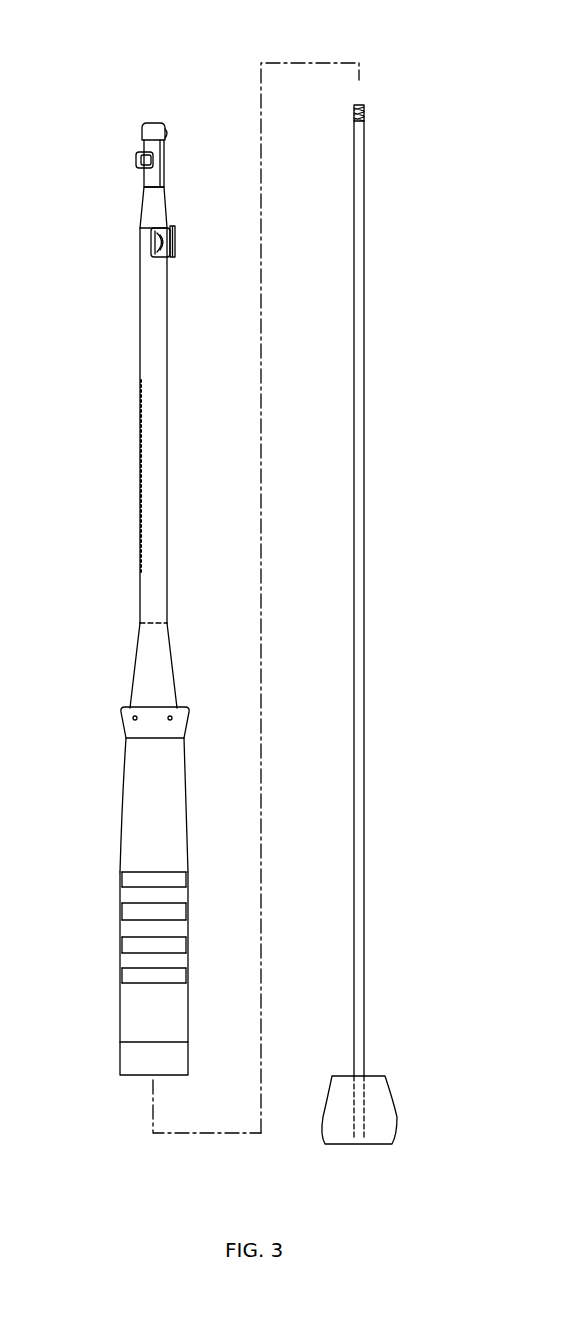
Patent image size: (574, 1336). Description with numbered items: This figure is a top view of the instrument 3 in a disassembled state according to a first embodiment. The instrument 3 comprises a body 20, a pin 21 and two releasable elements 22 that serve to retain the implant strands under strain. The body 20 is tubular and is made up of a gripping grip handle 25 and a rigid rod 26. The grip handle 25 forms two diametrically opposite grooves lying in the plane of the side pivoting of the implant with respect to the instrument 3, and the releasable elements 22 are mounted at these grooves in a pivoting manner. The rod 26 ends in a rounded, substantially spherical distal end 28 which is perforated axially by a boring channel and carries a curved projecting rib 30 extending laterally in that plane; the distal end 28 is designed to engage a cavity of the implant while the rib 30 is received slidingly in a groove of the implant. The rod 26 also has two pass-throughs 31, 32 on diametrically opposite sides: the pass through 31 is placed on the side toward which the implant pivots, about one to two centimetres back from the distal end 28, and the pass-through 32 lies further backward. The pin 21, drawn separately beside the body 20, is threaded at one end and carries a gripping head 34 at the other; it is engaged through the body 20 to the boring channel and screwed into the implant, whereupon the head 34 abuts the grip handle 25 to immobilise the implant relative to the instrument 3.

The instrument 3 is at (436, 50).
The body 20 is at (137, 660).
The pin 21 is at (360, 850).
The releasable elements 22 is at (118, 716).
The grip handle 25 is at (126, 851).
The rod 26 is at (147, 306).
The distal end 28 is at (142, 131).
The rib 30 is at (169, 133).
The pass through 31 is at (138, 168).
The pass-through 32 is at (171, 262).
The head 34 is at (386, 1115).